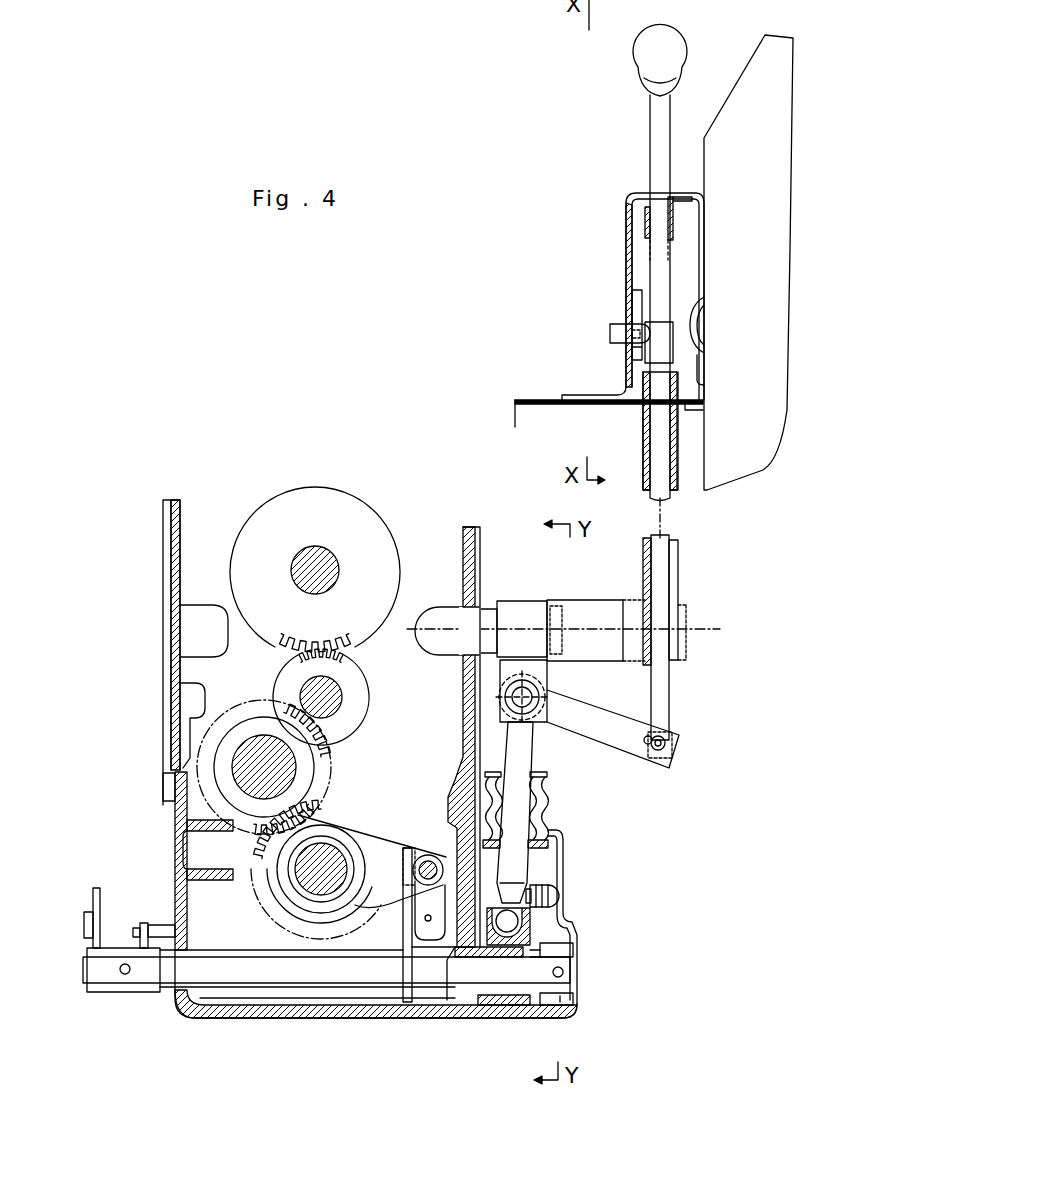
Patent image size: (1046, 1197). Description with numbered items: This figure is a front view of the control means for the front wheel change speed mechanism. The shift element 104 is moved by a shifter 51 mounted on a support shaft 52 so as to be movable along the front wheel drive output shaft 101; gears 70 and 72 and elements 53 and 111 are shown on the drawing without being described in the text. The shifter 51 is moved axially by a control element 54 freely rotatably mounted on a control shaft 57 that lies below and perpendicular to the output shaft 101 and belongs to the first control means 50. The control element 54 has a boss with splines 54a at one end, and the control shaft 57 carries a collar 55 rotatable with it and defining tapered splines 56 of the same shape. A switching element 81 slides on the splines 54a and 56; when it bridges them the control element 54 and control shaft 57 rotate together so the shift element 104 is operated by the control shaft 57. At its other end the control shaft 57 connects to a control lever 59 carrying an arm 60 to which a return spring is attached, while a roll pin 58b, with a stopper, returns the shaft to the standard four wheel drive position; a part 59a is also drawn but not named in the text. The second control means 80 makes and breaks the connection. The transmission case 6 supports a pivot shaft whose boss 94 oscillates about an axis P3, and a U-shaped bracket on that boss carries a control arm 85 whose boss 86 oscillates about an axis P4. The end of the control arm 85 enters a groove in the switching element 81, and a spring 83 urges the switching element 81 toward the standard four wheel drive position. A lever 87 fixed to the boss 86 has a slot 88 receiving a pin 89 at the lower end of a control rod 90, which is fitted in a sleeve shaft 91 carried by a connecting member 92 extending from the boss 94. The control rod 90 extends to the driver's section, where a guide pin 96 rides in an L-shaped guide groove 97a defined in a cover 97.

The transmission case 6 is at (178, 538).
The gear 70 is at (325, 562).
The gear 72 is at (245, 743).
The front wheel drive output shaft 101 is at (323, 855).
The shift element 104 is at (297, 897).
The shifter 51 is at (385, 828).
The support shaft 52 is at (428, 860).
The lever 53 is at (405, 925).
The control element 54 is at (448, 980).
The splines 54a is at (505, 1003).
The collar 55 is at (567, 955).
The splines 56 is at (565, 1008).
The control shaft 57 is at (265, 975).
The bottom wall 111 is at (340, 1013).
The first control means 50 is at (111, 996).
The control lever 59 is at (95, 888).
The bolt 59a is at (140, 925).
The arm 60 is at (85, 920).
The roll pin 58b is at (155, 925).
The second control means 80 is at (592, 797).
The switching element 81 is at (533, 937).
The spring 83 is at (550, 885).
The control arm 85 is at (523, 763).
The boss 86 is at (500, 710).
The lever 87 is at (605, 738).
The slot 88 is at (646, 752).
The pin 89 is at (646, 738).
The control rod 90 is at (662, 692).
The sleeve shaft 91 is at (678, 557).
The connecting member 92 is at (587, 603).
The boss 94 is at (513, 600).
The guide pin 96 is at (612, 335).
The cover 97 is at (627, 232).
The L-shaped guide groove 97a is at (631, 295).
The axis P3 is at (718, 628).
The axis P4 is at (527, 695).